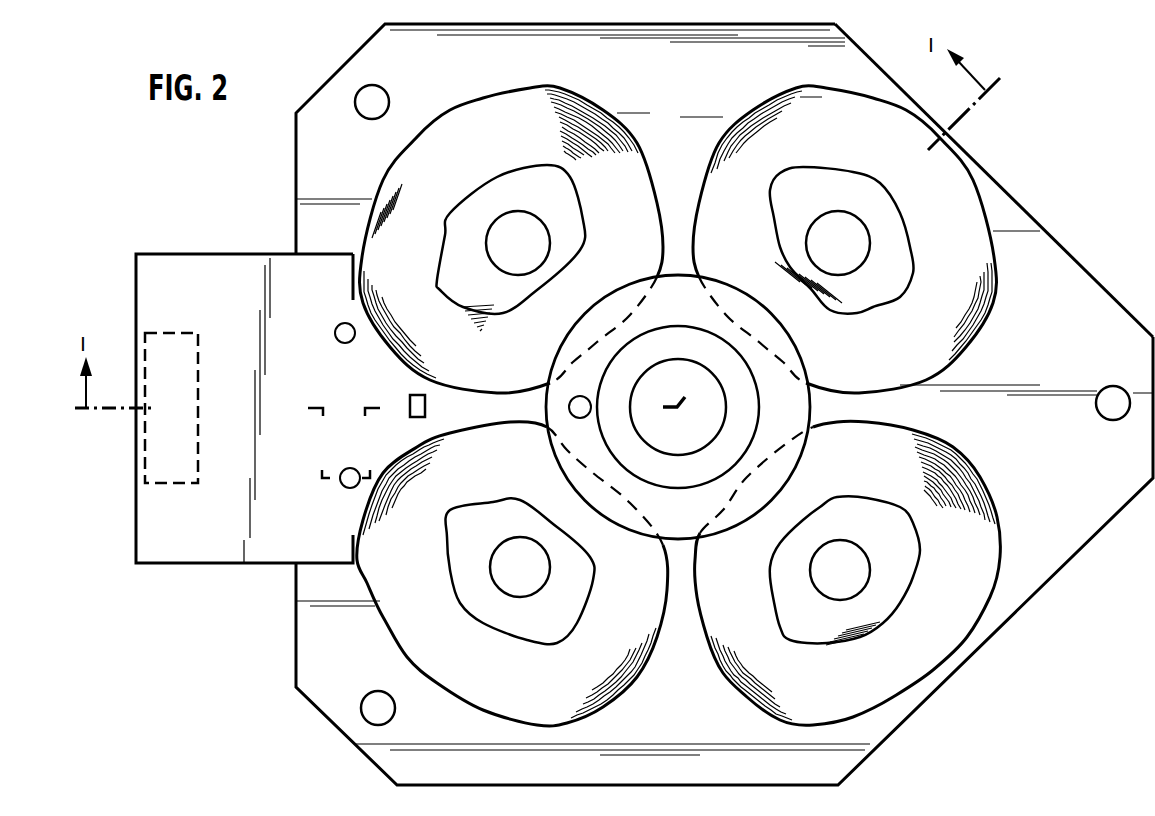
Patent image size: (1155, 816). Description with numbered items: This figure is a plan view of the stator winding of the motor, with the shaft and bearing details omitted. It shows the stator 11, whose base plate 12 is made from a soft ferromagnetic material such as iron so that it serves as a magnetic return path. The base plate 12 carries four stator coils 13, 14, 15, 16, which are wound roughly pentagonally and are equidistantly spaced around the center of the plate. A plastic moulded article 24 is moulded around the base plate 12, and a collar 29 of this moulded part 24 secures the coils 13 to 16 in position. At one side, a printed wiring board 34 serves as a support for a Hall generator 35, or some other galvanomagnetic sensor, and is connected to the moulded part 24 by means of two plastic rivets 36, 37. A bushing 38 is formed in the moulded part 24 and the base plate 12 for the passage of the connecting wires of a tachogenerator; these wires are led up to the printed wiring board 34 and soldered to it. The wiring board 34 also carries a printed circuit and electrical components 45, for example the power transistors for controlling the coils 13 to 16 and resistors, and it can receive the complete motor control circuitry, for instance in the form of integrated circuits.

The stator 11 is at (1050, 176).
The base plate 12 is at (1056, 340).
The stator coil 13 is at (471, 118).
The stator coil 14 is at (773, 127).
The stator coil 15 is at (985, 527).
The stator coil 16 is at (604, 692).
The plastic moulded article 24 is at (1105, 315).
The collar 29 is at (803, 416).
The printed wiring board 34 is at (221, 268).
The Hall generator 35 is at (405, 400).
The plastic rivet 36 is at (343, 489).
The plastic rivet 37 is at (340, 323).
The bushing 38 is at (573, 416).
The electrical components 45 is at (190, 373).